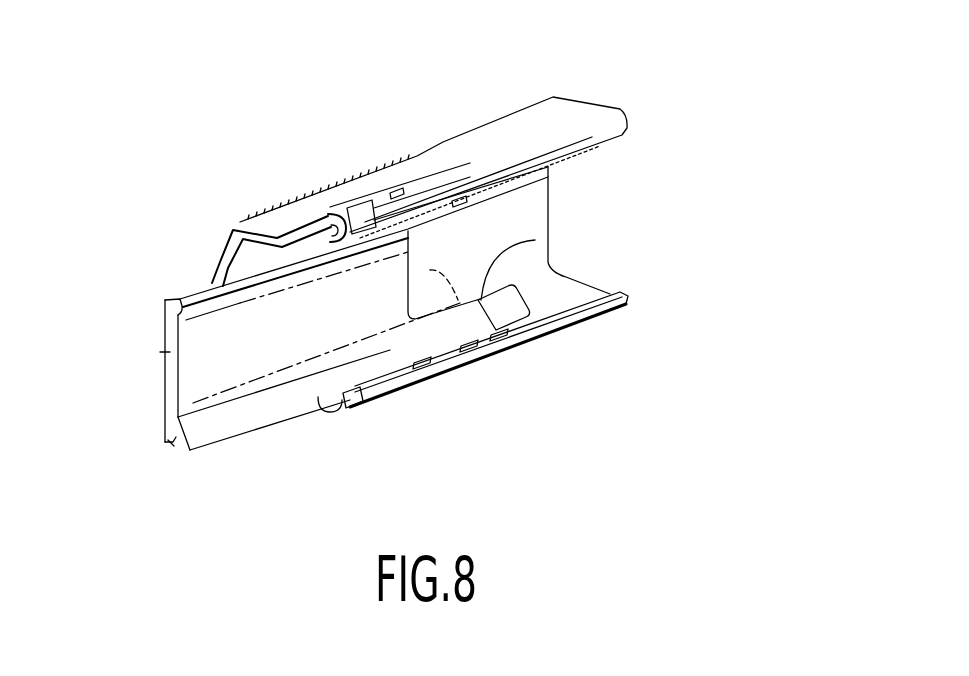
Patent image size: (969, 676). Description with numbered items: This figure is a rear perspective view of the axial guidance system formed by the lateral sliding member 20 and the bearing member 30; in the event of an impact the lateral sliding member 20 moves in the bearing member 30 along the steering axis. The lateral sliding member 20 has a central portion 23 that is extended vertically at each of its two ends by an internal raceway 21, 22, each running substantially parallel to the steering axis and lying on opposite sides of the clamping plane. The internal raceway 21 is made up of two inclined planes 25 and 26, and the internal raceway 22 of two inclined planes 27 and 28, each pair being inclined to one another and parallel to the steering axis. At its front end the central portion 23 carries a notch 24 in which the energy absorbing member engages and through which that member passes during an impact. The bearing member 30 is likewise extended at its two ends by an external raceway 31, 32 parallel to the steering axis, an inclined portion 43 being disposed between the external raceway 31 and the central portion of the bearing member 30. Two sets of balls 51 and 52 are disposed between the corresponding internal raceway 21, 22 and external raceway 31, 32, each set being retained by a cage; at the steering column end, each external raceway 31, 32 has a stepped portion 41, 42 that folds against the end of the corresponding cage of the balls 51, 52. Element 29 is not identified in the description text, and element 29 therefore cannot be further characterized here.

The lateral sliding member 20 is at (256, 445).
The internal raceway 21 is at (178, 300).
The internal raceway 22 is at (170, 450).
The central portion 23 is at (165, 352).
The notch 24 is at (547, 240).
The inclined plane 25 is at (218, 282).
The inclined plane 26 is at (188, 295).
The inclined plane 27 is at (182, 450).
The inclined plane 28 is at (164, 446).
The side wall 29 is at (163, 392).
The bearing member 30 is at (498, 108).
The external raceway 31 is at (590, 147).
The external raceway 32 is at (572, 306).
The stepped portion 41 is at (336, 212).
The stepped portion 42 is at (350, 408).
The inclined portion 43 is at (235, 242).
The balls 51 is at (458, 198).
The balls 52 is at (418, 370).